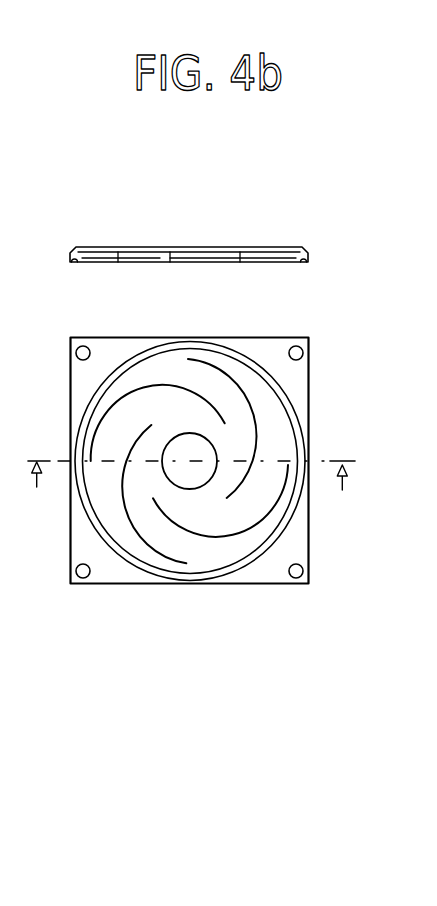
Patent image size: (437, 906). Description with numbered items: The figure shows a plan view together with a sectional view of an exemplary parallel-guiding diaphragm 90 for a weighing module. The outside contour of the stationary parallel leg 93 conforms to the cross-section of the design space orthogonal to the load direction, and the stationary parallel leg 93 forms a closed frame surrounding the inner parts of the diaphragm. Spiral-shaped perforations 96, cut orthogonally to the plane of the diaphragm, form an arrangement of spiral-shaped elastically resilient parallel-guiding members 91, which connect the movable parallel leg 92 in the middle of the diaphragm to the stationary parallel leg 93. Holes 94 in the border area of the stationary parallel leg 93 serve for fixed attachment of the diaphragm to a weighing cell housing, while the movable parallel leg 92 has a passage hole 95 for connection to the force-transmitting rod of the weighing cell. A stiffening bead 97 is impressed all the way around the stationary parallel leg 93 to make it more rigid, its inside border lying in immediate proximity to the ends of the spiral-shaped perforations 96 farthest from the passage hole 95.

The parallel-guiding diaphragm 90 is at (183, 672).
The parallel-guiding members 91 is at (259, 496).
The movable parallel leg 92 is at (197, 497).
The stationary parallel leg 93 is at (293, 543).
The holes 94 is at (303, 351).
The passage hole 95 is at (190, 461).
The spiral-shaped perforations 96 is at (265, 518).
The stiffening bead 97 is at (305, 250).